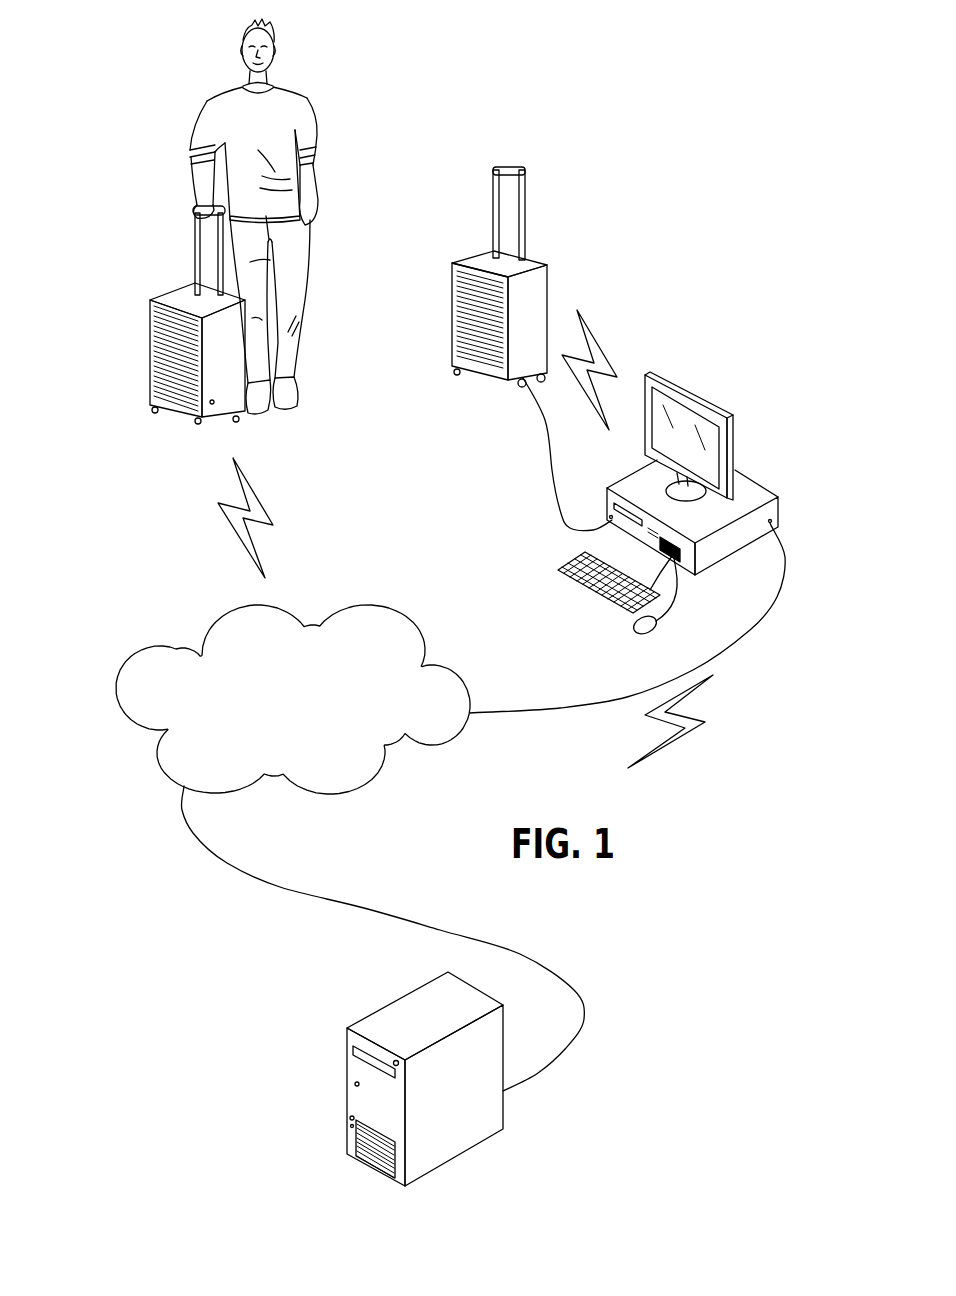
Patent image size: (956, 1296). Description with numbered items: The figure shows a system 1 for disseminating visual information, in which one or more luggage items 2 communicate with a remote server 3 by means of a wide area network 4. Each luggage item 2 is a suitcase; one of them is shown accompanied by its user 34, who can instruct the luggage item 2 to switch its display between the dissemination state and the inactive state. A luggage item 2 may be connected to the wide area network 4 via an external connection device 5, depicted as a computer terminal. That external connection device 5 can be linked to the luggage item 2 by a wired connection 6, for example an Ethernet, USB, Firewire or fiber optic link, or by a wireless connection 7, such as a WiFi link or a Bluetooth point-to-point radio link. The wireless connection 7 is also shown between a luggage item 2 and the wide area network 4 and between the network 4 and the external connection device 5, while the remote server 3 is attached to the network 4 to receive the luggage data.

The system for disseminating visual information 1 is at (142, 1077).
The luggage item 2 is at (160, 372).
The remote server 3 is at (448, 1141).
The wide area network 4 is at (340, 771).
The external connection device 5 is at (687, 415).
The wired connection 6 is at (550, 473).
The wireless connection 7 is at (263, 512).
The user 34 is at (290, 110).